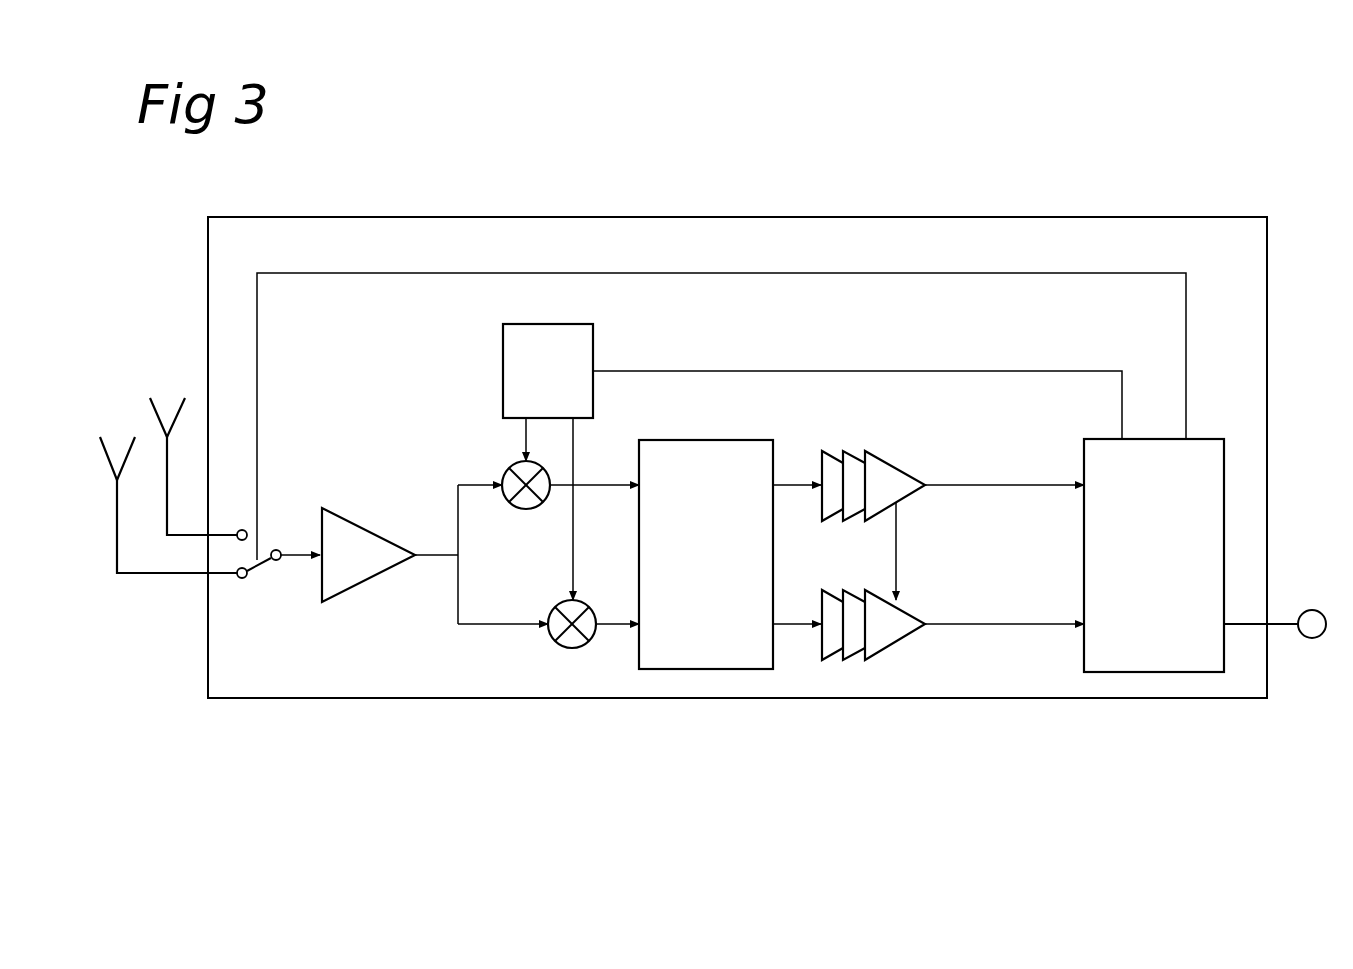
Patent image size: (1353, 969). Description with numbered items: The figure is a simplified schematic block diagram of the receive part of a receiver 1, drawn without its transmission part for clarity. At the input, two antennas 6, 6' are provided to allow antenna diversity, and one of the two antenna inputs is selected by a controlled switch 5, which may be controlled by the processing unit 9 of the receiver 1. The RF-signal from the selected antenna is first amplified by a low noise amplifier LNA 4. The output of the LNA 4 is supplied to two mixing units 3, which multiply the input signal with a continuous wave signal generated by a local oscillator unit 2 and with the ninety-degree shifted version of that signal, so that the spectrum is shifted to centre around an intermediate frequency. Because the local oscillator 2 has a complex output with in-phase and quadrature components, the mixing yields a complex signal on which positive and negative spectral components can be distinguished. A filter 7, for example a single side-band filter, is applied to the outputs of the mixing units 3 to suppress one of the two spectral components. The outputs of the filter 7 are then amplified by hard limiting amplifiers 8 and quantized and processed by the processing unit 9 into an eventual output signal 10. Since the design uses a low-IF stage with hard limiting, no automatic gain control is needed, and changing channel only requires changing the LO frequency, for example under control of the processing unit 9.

The receiver 1 is at (1093, 698).
The local oscillator unit 2 is at (513, 374).
The mixing units 3 is at (527, 500).
The low noise amplifier 4 is at (353, 577).
The controlled switch 5 is at (270, 562).
The antenna 6 is at (154, 505).
The antenna 6' is at (152, 466).
The filter 7 is at (710, 667).
The hard limiting amplifiers 8 is at (873, 505).
The processing unit 9 is at (1224, 535).
The output signal 10 is at (1314, 620).